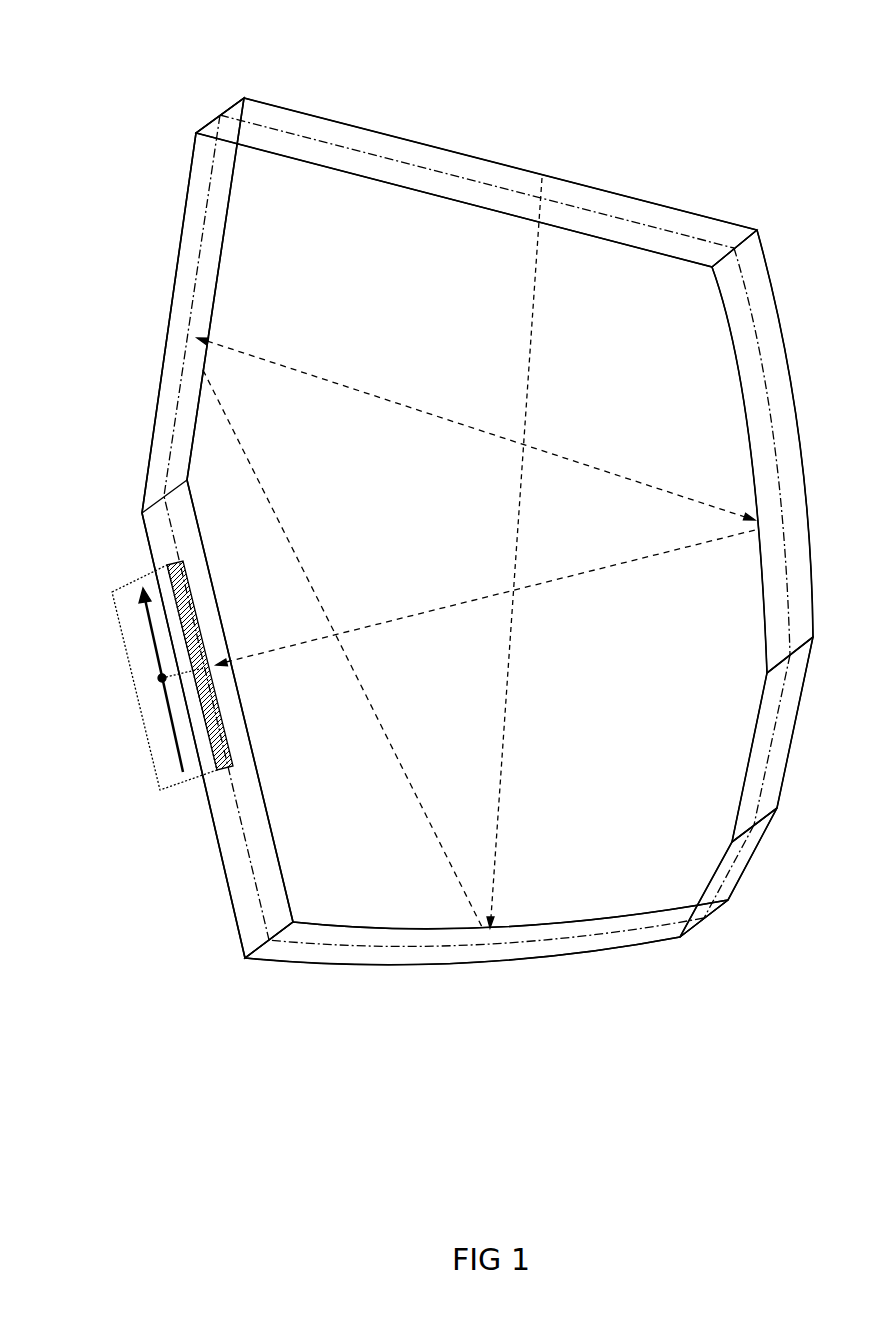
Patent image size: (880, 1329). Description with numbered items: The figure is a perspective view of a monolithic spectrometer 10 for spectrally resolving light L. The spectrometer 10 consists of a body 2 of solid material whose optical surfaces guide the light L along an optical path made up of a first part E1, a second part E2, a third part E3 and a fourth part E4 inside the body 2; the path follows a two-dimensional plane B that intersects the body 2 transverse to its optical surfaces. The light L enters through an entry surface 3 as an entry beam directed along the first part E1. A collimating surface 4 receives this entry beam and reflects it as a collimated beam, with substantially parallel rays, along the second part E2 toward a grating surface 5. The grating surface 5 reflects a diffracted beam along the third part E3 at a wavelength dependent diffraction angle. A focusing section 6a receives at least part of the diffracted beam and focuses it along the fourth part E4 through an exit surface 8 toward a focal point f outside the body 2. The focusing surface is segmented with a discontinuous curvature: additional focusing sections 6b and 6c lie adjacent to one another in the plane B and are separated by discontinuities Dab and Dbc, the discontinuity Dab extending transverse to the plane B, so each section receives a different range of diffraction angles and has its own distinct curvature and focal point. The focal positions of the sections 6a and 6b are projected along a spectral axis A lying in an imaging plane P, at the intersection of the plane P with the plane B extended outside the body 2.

The monolithic spectrometer 10 is at (132, 82).
The body 2 is at (671, 314).
The entry surface 3 is at (580, 189).
The collimating surface 4 is at (532, 934).
The grating surface 5 is at (209, 290).
The focusing section 6a is at (763, 462).
The focusing section 6b is at (760, 750).
The focusing section 6c is at (717, 879).
The exit surface 8 is at (233, 728).
The light L is at (543, 167).
The imaging plane P is at (124, 580).
The spectral axis A is at (167, 706).
The two-dimensional plane B is at (248, 852).
The focal point f is at (172, 678).
The first part of the optical path E1 is at (517, 553).
The second part of the optical path E2 is at (342, 648).
The third part of the optical path E3 is at (476, 429).
The fourth part of the optical path E4 is at (485, 598).
The discontinuity Dab is at (770, 652).
The discontinuity Dbc is at (739, 818).